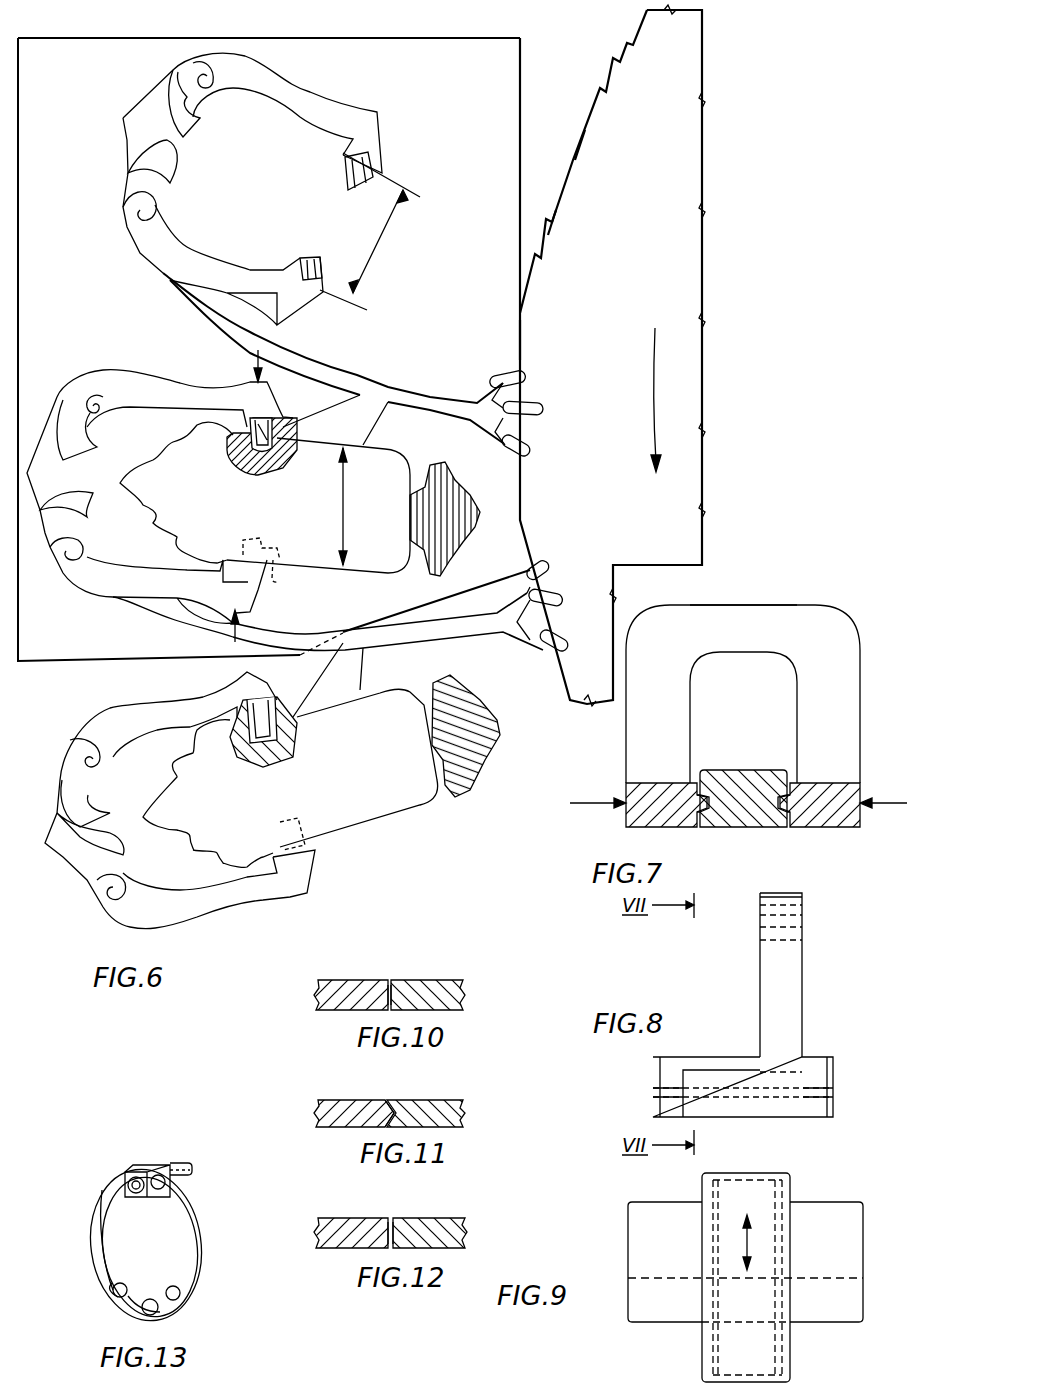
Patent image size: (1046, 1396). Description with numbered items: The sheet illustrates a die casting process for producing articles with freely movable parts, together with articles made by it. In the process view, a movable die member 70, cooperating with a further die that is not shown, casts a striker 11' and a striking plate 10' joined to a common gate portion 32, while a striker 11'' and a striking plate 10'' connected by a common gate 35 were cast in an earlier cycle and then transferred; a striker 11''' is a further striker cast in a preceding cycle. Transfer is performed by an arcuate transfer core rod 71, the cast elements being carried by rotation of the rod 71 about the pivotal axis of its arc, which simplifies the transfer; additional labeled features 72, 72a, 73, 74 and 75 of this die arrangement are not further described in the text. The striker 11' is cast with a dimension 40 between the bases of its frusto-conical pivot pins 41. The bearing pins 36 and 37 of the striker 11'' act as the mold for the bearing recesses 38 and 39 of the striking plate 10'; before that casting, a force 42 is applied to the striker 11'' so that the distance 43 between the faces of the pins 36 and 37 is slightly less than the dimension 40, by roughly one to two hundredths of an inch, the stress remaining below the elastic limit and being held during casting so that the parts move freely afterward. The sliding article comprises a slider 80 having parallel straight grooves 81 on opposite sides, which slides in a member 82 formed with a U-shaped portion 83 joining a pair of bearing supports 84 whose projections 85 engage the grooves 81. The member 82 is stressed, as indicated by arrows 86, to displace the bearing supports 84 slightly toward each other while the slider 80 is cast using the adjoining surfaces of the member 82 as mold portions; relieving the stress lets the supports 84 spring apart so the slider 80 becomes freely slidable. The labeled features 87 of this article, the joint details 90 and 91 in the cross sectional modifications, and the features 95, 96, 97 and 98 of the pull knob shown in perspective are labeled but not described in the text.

In FIG. 6, the striking plate 10' is at (335, 497).
In FIG. 6, the striking plate 10'' is at (365, 762).
In FIG. 6, the striker 11' is at (252, 189).
In FIG. 6, the striker 11'' is at (160, 480).
In FIG. 6, the striker 11''' is at (180, 800).
In FIG. 6, the gate portion 32 is at (385, 392).
In FIG. 6, the common gate 35 is at (335, 640).
In FIG. 6, the bearing pin 36 is at (243, 548).
In FIG. 6, the bearing pin 37 is at (278, 430).
In FIG. 6, the bearing recess 38 is at (278, 578).
In FIG. 6, the bearing recess 39 is at (270, 470).
In FIG. 6, the double ended arrow 40 is at (380, 257).
In FIG. 6, the frusto-conical pivot pins 41 is at (345, 175).
In FIG. 6, the arrows 42 is at (257, 364).
In FIG. 6, the double ended arrow 43 is at (345, 523).
In FIG. 6, the movable die member 70 is at (512, 100).
In FIG. 6, the transfer core rod 71 is at (628, 44).
In FIG. 6, the cut edge segment 72 is at (553, 178).
In FIG. 6, the straight edge portion 72a is at (521, 340).
In FIG. 6, the feed direction arrow 73 is at (656, 381).
In FIG. 6, the cut edge segment 74 is at (553, 240).
In FIG. 6, the sprue branches 75 is at (500, 388).
In FIG. 7, the slider 80 is at (753, 817).
In FIG. 8, the slider 80 is at (655, 1050).
In FIG. 9, the slider 80 is at (708, 1343).
In FIG. 10, the slider 80 is at (440, 984).
In FIG. 11, the slider 80 is at (440, 1104).
In FIG. 12, the slider 80 is at (442, 1222).
In FIG. 7, the grooves 81 is at (765, 790).
In FIG. 8, the grooves 81 is at (658, 1090).
In FIG. 7, the member 82 is at (833, 625).
In FIG. 8, the member 82 is at (790, 982).
In FIG. 7, the U-shaped portion 83 is at (779, 583).
In FIG. 8, the U-shaped portion 83 is at (795, 910).
In FIG. 7, the bearing supports 84 is at (633, 817).
In FIG. 9, the bearing supports 84 is at (632, 1215).
In FIG. 10, the bearing supports 84 is at (338, 984).
In FIG. 11, the bearing supports 84 is at (338, 1104).
In FIG. 12, the bearing supports 84 is at (340, 1222).
In FIG. 7, the projections 85 is at (700, 800).
In FIG. 7, the arrows 86 is at (587, 794).
In FIG. 8, the end cap 87 is at (665, 1066).
In FIG. 10, the butt joint 90 is at (385, 988).
In FIG. 11, the V joint 91 is at (388, 1108).
In FIG. 12, the V joint 91 is at (388, 1226).
In FIG. 13, the ring 95 is at (100, 1270).
In FIG. 13, the block 96 is at (148, 1168).
In FIG. 13, the pin 97 is at (130, 1168).
In FIG. 13, the rivet 98 is at (133, 1199).